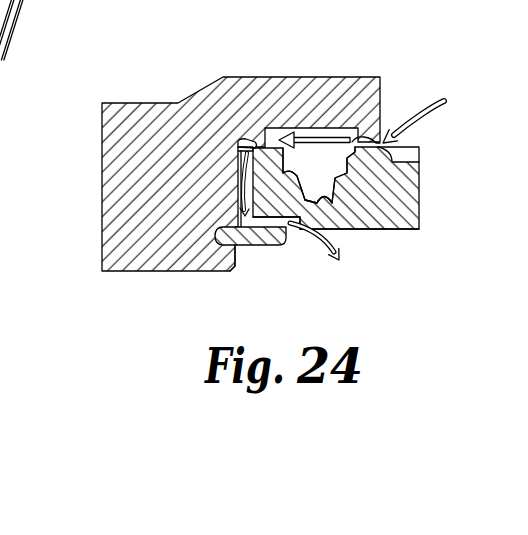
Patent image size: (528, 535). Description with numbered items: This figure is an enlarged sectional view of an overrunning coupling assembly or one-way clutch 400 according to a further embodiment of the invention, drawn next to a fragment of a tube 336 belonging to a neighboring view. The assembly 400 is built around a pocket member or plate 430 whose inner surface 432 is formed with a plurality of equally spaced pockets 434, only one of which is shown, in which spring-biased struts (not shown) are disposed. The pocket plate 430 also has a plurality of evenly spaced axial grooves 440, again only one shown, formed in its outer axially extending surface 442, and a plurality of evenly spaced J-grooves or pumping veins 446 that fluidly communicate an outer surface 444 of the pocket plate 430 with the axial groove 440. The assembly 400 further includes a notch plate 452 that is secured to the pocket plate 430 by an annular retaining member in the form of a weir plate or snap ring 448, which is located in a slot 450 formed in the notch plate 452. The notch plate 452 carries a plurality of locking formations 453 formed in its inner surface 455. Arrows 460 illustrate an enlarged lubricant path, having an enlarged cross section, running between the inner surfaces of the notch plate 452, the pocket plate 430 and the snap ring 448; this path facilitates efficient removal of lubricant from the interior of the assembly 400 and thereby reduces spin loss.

The tube 336 is at (17, 25).
The overrunning coupling assembly 400 is at (282, 165).
The pocket member or plate 430 is at (368, 183).
The inner surface 432 is at (366, 141).
The pockets 434 is at (330, 210).
The axial grooves 440 is at (238, 193).
The outer axially extending surface 442 is at (240, 155).
The outer surface 444 is at (388, 232).
The J-grooves or pumping veins 446 is at (268, 220).
The weir plate or snap ring 448 is at (257, 247).
The slot 450 is at (225, 246).
The notch plate 452 is at (299, 73).
The locking formations 453 is at (352, 127).
The inner surface 455 is at (247, 143).
The arrows 460 is at (319, 137).